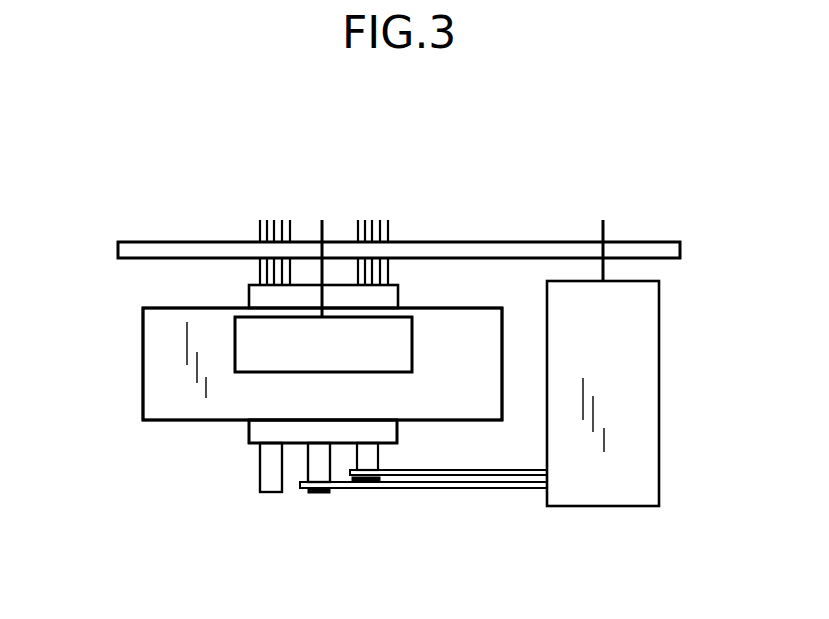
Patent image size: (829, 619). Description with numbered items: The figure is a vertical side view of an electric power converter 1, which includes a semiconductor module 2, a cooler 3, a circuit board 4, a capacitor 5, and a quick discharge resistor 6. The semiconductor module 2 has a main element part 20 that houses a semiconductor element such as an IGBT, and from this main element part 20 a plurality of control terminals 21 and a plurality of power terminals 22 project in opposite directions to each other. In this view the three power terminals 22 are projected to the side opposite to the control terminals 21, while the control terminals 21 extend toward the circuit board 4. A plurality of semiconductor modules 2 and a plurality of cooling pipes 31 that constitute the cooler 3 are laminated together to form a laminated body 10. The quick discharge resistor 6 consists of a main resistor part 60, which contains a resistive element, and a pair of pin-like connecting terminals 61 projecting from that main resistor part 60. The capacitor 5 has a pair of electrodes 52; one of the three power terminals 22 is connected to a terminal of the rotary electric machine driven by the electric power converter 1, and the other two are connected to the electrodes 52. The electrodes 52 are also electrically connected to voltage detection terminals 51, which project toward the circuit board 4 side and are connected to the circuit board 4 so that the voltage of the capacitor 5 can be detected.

The electric power converter 1 is at (586, 163).
The laminated body 10 is at (131, 308).
The semiconductor module 2 is at (258, 438).
The main element part 20 is at (258, 427).
The power terminals 22 is at (271, 480).
The control terminals 21 is at (291, 220).
The cooler 3 is at (162, 387).
The cooling pipe 31 is at (175, 406).
The circuit board 4 is at (161, 252).
The capacitor 5 is at (640, 481).
The voltage detection terminals 51 is at (603, 236).
The electrodes 52 is at (468, 488).
The quick discharge resistor 6 is at (412, 351).
The main resistor part 60 is at (397, 334).
The connecting terminals 61 is at (322, 222).